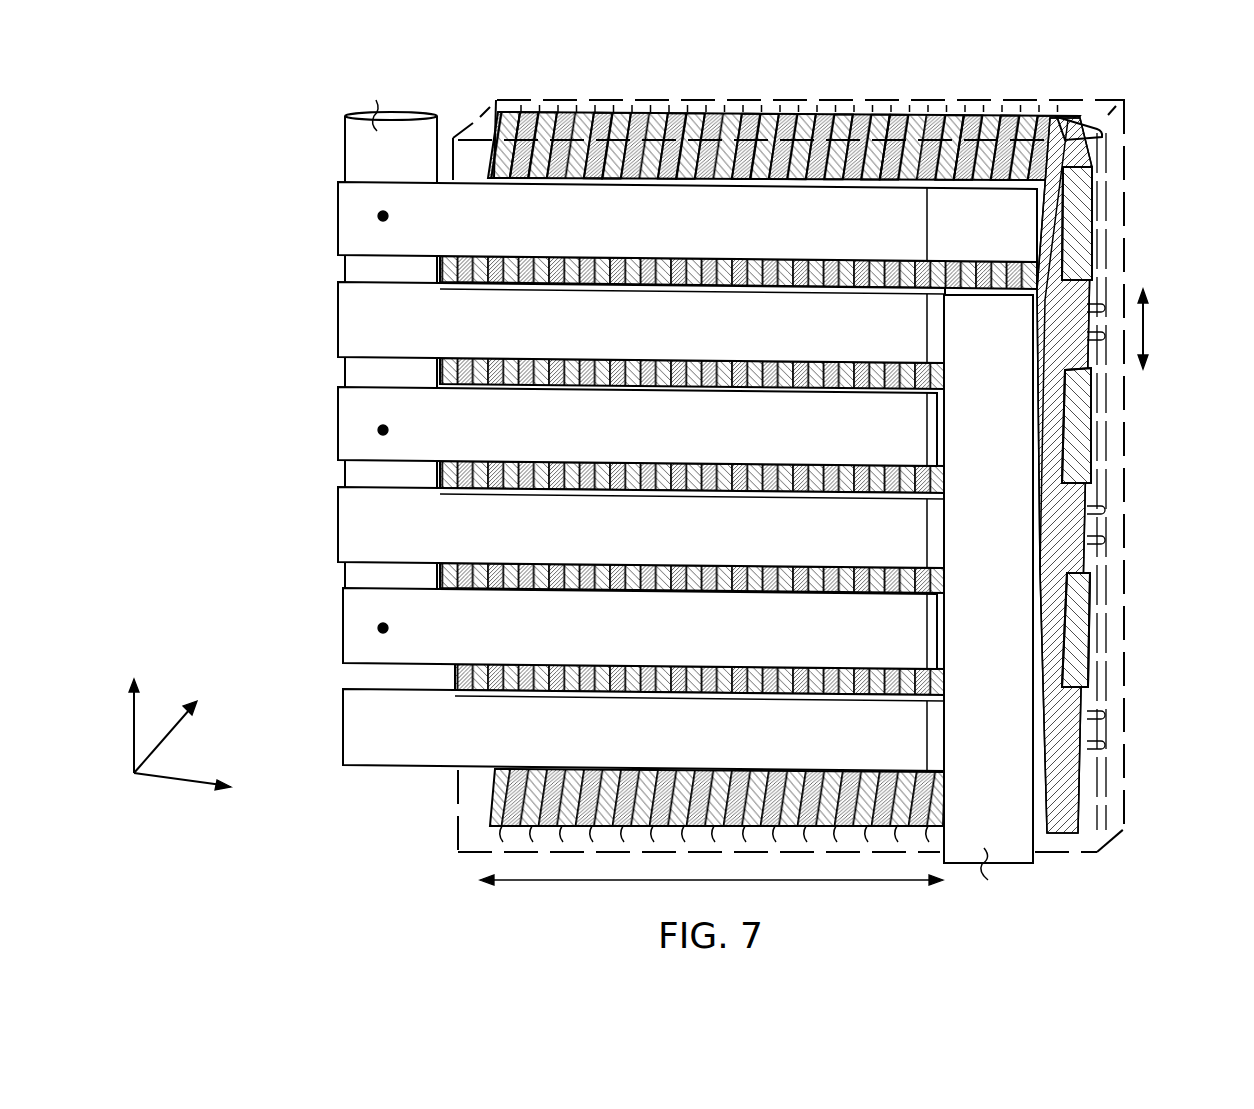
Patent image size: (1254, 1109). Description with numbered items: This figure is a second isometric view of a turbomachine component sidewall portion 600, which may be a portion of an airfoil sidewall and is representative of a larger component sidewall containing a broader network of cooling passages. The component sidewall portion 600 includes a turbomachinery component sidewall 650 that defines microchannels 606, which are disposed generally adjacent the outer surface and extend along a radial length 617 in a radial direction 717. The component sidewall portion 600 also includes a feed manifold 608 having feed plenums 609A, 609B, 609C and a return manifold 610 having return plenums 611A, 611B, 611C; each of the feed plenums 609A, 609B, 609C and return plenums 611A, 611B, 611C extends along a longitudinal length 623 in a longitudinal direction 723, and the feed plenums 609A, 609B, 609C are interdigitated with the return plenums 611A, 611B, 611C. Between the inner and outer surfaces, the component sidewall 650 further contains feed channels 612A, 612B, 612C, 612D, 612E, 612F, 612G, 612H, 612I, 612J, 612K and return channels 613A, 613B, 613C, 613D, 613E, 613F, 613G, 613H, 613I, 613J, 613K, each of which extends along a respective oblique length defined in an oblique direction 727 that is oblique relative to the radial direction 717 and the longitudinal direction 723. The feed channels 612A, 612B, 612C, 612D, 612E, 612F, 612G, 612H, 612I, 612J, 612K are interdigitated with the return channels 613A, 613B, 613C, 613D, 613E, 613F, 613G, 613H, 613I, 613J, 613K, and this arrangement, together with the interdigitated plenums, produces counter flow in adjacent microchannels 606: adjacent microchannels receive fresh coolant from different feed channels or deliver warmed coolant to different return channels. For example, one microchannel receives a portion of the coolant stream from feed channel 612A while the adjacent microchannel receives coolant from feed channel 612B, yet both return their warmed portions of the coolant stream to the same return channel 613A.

The turbomachine component sidewall portion 600 is at (1162, 58).
The microchannels 606 is at (1116, 243).
The feed manifold 608 is at (993, 417).
The feed plenum 609A is at (383, 330).
The feed plenum 609B is at (383, 531).
The feed plenum 609C is at (383, 733).
The return manifold 610 is at (362, 174).
The return plenum 611A is at (383, 216).
The return plenum 611B is at (383, 430).
The return plenum 611C is at (383, 629).
The feed channel 612A is at (1078, 672).
The feed channel 612B is at (1082, 203).
The feed channel 612C is at (1059, 128).
The feed channel 612D is at (1007, 128).
The feed channel 612E is at (952, 128).
The feed channel 612F is at (878, 128).
The feed channel 612G is at (804, 128).
The feed channel 612H is at (748, 128).
The feed channel 612I is at (674, 128).
The feed channel 612J is at (600, 128).
The feed channel 612K is at (526, 128).
The return channel 613A is at (1080, 462).
The return channel 613B is at (1103, 131).
The return channel 613C is at (1044, 132).
The return channel 613D is at (970, 132).
The return channel 613E is at (896, 132).
The return channel 613F is at (841, 132).
The return channel 613G is at (767, 132).
The return channel 613H is at (693, 132).
The return channel 613I is at (619, 132).
The return channel 613J is at (545, 132).
The return channel 613K is at (508, 132).
The radial length 617 is at (1150, 331).
The longitudinal length 623 is at (704, 886).
The turbomachinery component sidewall 650 is at (1122, 443).
The radial direction 717 is at (132, 727).
The longitudinal direction 723 is at (183, 775).
The oblique direction 727 is at (168, 730).